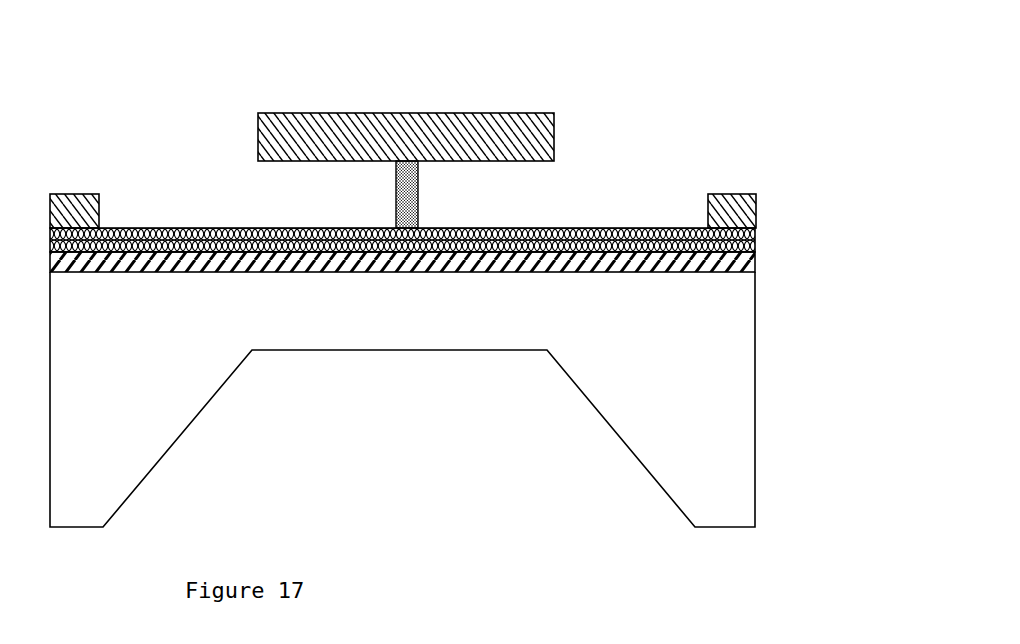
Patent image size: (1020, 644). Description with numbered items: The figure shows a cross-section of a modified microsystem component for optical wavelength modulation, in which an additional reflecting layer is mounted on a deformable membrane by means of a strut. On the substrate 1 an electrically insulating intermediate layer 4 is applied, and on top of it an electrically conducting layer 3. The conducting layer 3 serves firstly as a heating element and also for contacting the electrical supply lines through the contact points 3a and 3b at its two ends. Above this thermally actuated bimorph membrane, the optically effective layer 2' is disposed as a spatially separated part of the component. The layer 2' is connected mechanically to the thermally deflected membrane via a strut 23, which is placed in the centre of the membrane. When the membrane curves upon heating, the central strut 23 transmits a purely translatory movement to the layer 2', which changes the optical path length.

The substrate 1 is at (692, 469).
The optically effective layer 2' is at (406, 94).
The electrically conducting layer 3 is at (753, 242).
The contact point 3a is at (136, 228).
The contact point 3b is at (622, 228).
The electrically insulating intermediate layer 4 is at (750, 275).
The strut 23 is at (410, 203).